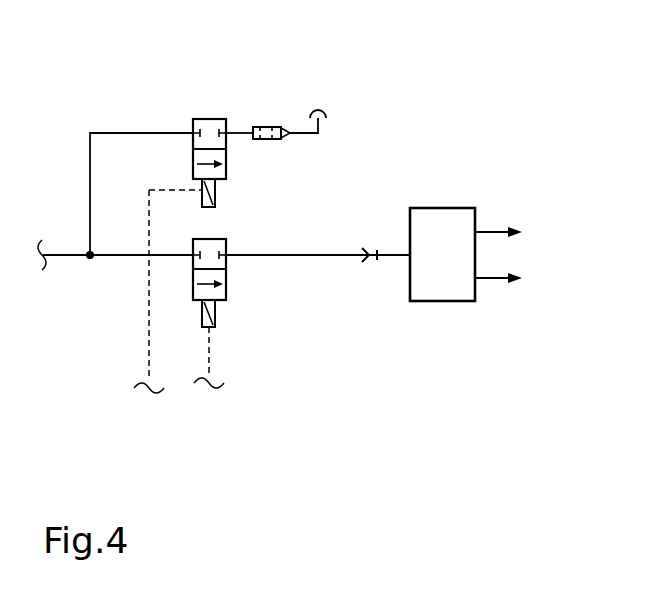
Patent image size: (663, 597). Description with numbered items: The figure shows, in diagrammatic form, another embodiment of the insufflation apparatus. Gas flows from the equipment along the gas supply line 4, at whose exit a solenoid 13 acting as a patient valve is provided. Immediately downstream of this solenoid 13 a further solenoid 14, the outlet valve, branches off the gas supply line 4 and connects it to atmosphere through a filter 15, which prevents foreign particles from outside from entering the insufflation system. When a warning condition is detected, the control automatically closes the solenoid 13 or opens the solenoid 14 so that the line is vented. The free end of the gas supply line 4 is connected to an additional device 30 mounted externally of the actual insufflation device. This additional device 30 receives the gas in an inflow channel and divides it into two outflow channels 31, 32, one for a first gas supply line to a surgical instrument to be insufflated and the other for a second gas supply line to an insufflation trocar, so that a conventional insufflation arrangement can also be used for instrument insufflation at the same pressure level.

The gas supply line 4 is at (62, 254).
The solenoid (patient valve) 13 is at (228, 292).
The solenoid (outlet valve) 14 is at (212, 119).
The filter 15 is at (268, 127).
The additional device 30 is at (442, 301).
The outflow channel 31 is at (492, 232).
The outflow channel 32 is at (492, 278).